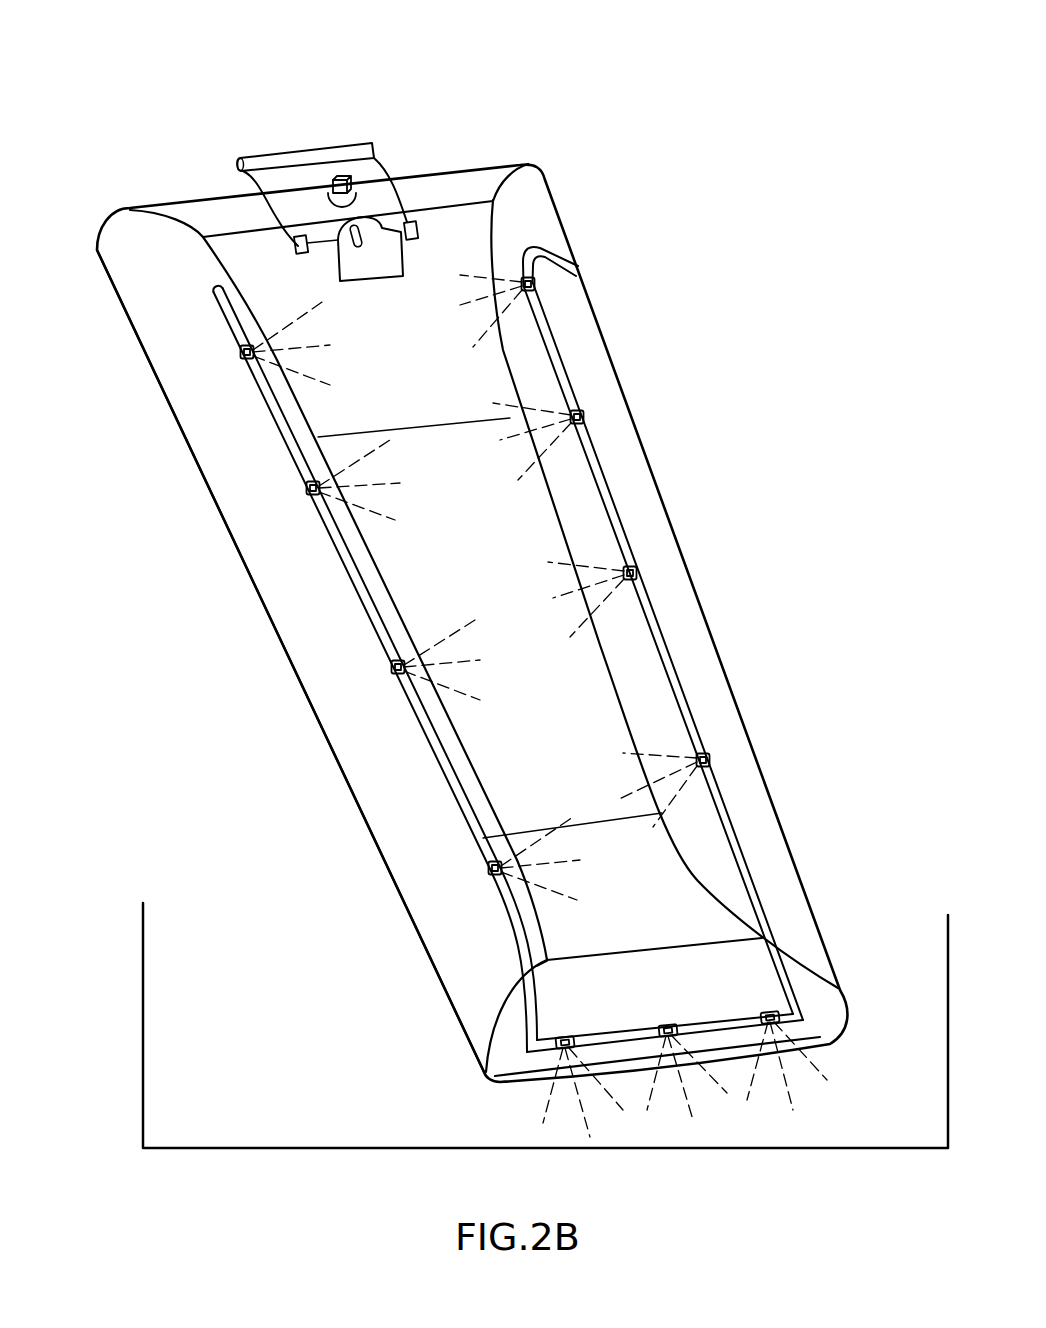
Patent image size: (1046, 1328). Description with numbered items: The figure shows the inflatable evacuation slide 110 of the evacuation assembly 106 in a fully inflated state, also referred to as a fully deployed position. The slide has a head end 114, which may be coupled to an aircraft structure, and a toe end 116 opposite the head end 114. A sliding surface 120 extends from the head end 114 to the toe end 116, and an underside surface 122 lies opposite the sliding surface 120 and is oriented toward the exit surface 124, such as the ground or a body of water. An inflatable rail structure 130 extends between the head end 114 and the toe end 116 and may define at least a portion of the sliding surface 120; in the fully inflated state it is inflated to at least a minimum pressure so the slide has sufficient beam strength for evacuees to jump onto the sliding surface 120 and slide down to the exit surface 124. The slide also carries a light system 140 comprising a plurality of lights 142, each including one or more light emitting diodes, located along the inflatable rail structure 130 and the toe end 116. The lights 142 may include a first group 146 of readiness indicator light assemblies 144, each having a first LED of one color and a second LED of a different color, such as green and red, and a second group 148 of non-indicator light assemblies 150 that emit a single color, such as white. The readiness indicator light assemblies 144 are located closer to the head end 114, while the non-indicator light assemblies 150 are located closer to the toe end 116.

The evacuation assembly 106 is at (137, 64).
The inflatable evacuation slide 110 is at (124, 162).
The head end 114 is at (439, 168).
The toe end 116 is at (820, 1045).
The sliding surface 120 is at (514, 571).
The underside surface 122 is at (355, 834).
The exit surface 124 is at (307, 1116).
The inflatable rail structure 130 is at (228, 450).
The light system 140 is at (568, 245).
The lights 142 is at (553, 302).
The readiness indicator light assemblies 144 is at (536, 285).
The first group 146 is at (727, 244).
The second group 148 is at (360, 860).
The non-indicator light assemblies 150 is at (710, 760).